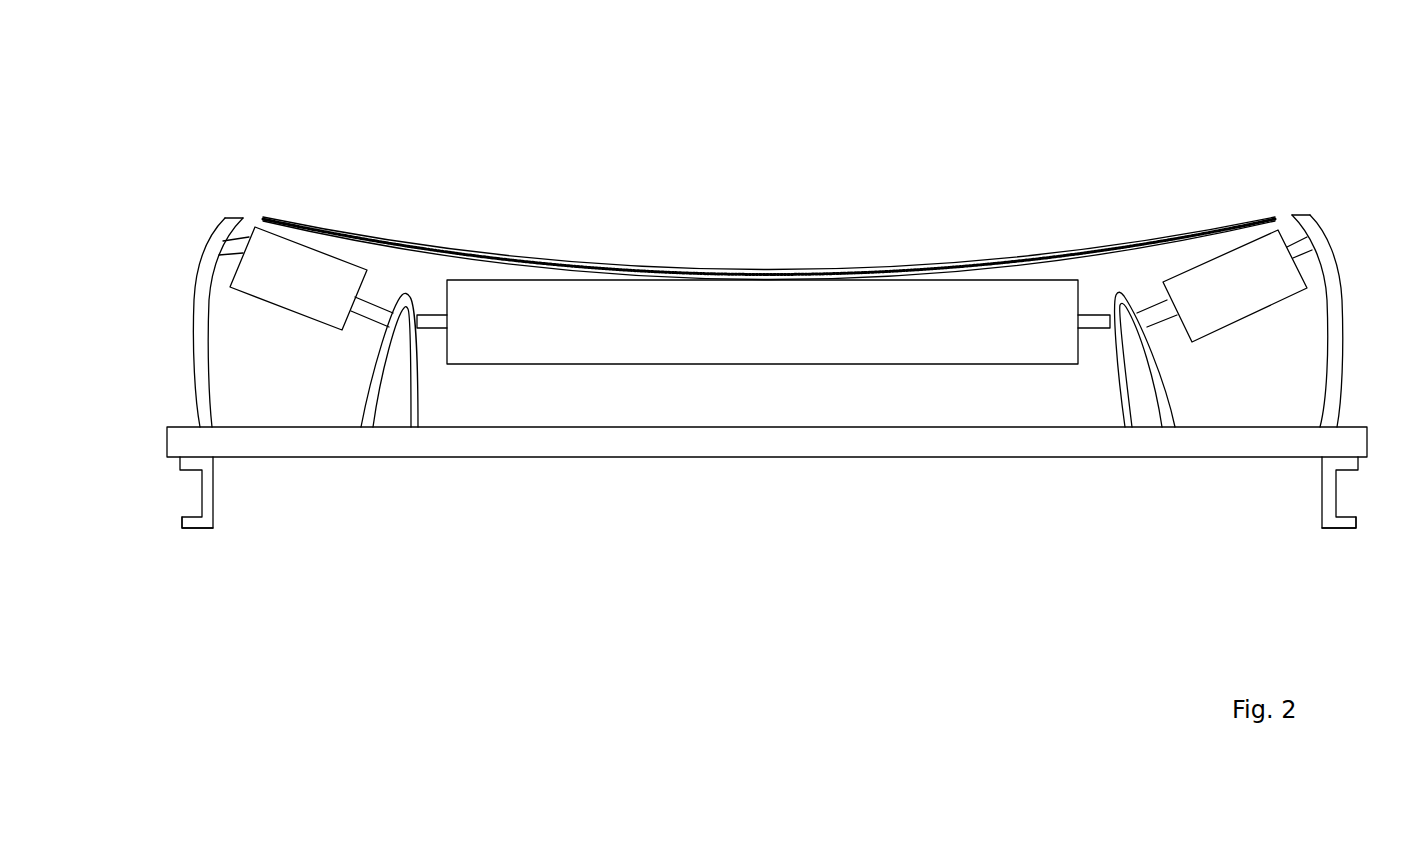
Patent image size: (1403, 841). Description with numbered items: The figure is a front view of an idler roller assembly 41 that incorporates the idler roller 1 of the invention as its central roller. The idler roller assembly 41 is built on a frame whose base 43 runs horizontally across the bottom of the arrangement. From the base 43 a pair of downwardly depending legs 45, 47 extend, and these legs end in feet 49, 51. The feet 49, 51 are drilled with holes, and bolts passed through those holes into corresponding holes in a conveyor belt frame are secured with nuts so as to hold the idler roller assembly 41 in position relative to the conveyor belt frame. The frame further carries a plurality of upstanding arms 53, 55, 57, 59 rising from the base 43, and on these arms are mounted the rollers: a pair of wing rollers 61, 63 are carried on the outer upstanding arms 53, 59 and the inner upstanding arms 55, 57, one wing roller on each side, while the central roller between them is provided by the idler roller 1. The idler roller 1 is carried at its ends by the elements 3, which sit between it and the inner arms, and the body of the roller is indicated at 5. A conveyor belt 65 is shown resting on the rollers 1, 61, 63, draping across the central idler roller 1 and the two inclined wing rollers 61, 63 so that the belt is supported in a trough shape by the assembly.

The idler roller 1 is at (763, 357).
The bearing element 3 is at (432, 318).
The actuator body 5 is at (947, 322).
The idler roller assembly 41 is at (1252, 122).
The base 43 is at (743, 457).
The downwardly depending leg 45 is at (207, 492).
The downwardly depending leg 47 is at (1330, 507).
The foot 49 is at (193, 523).
The foot 51 is at (1340, 527).
The upstanding arm 53 is at (203, 278).
The upstanding arm 55 is at (373, 380).
The upstanding arm 57 is at (1157, 380).
The upstanding arm 59 is at (1333, 280).
The wing roller 61 is at (1218, 282).
The wing roller 63 is at (311, 267).
The conveyor belt 65 is at (732, 270).